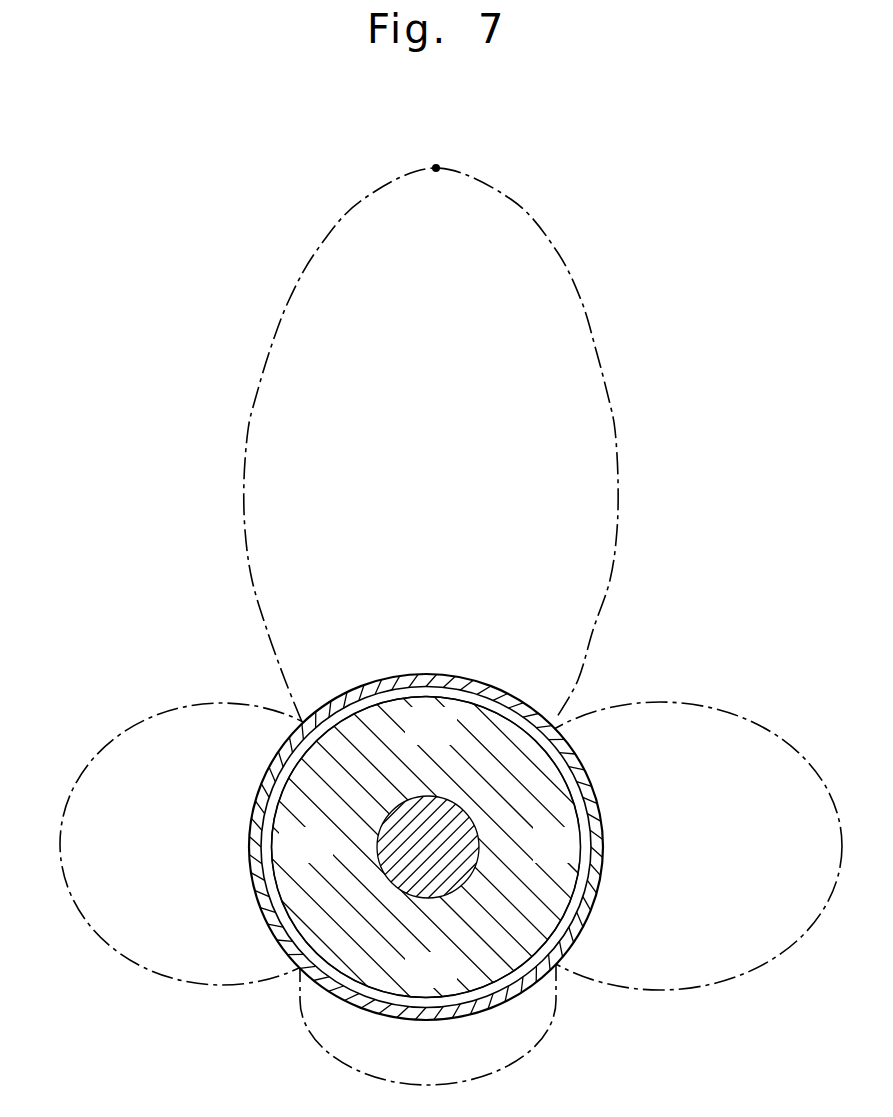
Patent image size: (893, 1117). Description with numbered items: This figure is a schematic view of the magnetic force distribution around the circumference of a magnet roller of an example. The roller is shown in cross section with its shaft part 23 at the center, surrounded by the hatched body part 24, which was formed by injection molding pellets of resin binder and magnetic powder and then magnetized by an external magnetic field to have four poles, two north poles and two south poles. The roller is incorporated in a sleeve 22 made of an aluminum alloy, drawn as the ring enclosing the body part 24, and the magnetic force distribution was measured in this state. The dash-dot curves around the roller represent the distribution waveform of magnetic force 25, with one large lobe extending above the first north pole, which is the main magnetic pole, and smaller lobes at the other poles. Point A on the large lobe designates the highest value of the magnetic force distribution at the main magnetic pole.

The sleeve 22 is at (581, 757).
The shaft part 23 is at (460, 858).
The body part 24 is at (318, 918).
The distribution waveform of magnetic force 25 is at (568, 293).